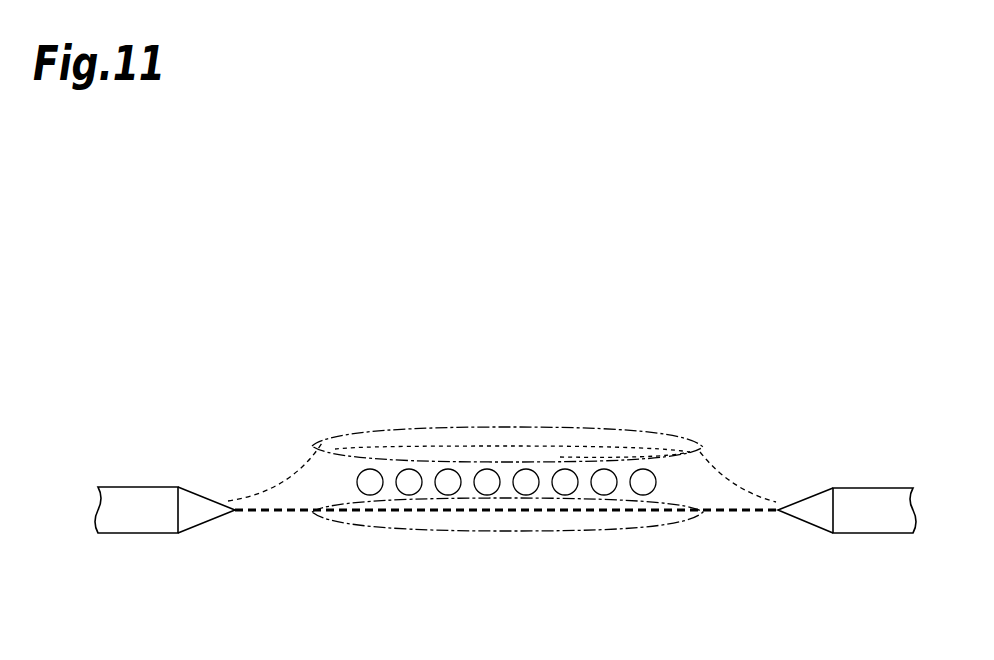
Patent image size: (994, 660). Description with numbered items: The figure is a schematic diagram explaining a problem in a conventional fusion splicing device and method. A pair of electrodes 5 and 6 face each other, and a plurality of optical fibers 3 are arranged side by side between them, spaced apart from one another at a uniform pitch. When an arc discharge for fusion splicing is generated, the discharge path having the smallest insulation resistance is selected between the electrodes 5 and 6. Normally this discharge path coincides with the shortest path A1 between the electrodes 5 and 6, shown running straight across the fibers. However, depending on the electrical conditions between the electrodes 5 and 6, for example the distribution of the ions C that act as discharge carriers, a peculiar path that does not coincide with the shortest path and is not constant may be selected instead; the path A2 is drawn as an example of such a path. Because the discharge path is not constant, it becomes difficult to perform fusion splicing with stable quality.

The electrode 5 is at (140, 487).
The electrode 6 is at (868, 488).
The optical fibers 3 is at (539, 492).
The shortest path A1 is at (451, 499).
The path A2 is at (617, 447).
The ions C is at (496, 427).